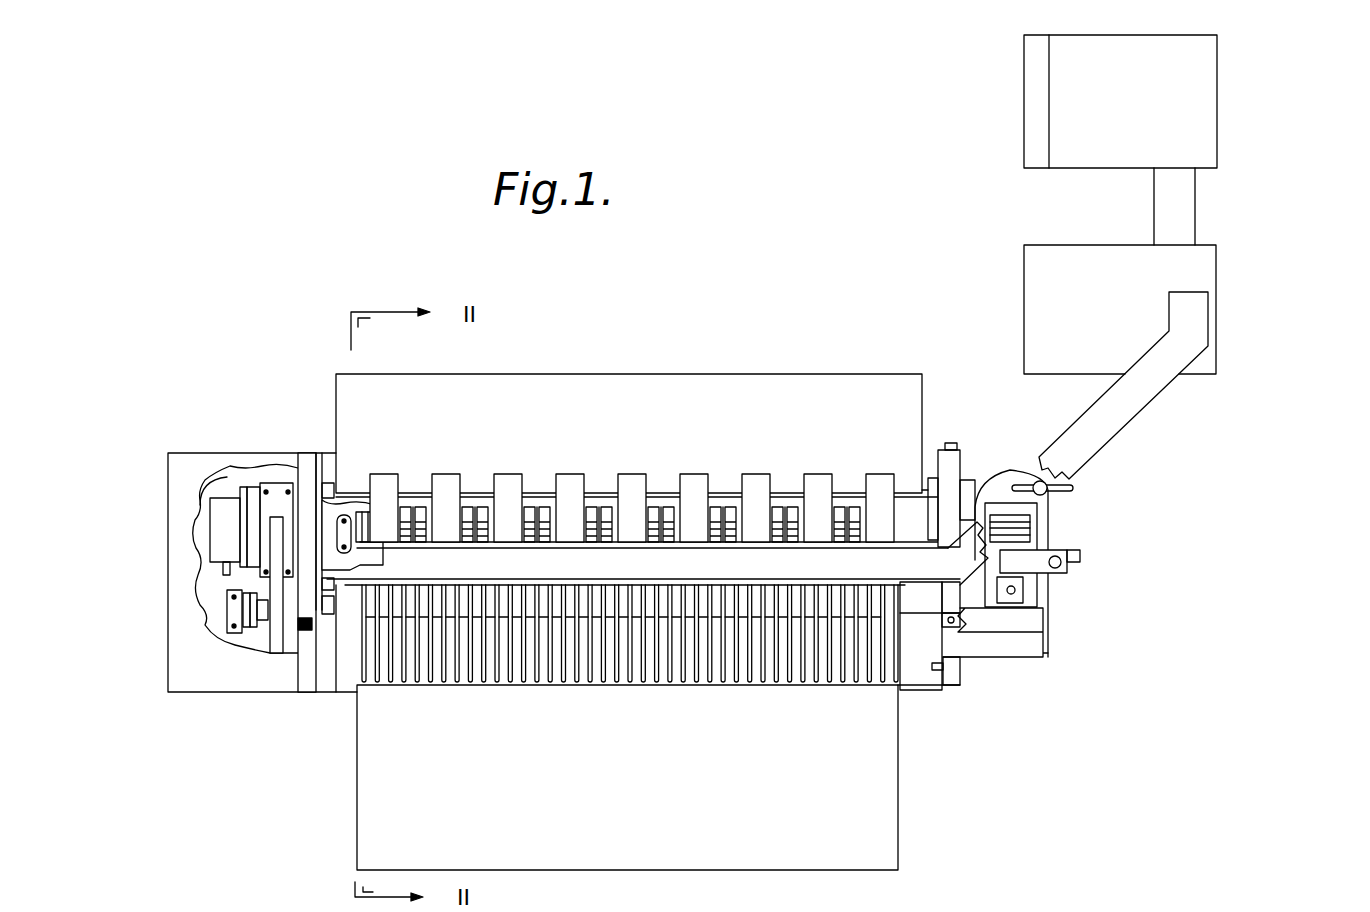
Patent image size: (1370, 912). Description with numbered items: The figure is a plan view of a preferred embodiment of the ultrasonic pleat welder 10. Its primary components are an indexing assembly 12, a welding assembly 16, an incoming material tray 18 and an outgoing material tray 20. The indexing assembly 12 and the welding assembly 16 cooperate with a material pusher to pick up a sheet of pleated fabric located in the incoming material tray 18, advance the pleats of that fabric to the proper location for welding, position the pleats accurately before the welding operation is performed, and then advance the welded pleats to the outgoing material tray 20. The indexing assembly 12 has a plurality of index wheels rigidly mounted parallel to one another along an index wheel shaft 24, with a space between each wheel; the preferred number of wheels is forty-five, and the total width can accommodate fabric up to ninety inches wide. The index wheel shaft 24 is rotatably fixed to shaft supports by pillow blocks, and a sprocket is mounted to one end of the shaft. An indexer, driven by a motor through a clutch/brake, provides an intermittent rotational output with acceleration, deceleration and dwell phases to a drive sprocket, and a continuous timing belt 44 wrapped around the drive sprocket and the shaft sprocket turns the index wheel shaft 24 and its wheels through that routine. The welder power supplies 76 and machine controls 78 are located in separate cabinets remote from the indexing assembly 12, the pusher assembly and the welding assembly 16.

The ultrasonic pleat welder 10 is at (761, 328).
The indexing assembly 12 is at (916, 670).
The welding assembly 16 is at (705, 462).
The incoming material tray 18 is at (642, 811).
The outgoing material tray 20 is at (577, 398).
The index wheel shaft 24 is at (338, 612).
The timing belt 44 is at (275, 553).
The welder power supplies 76 is at (1161, 271).
The machine controls 78 is at (1199, 114).